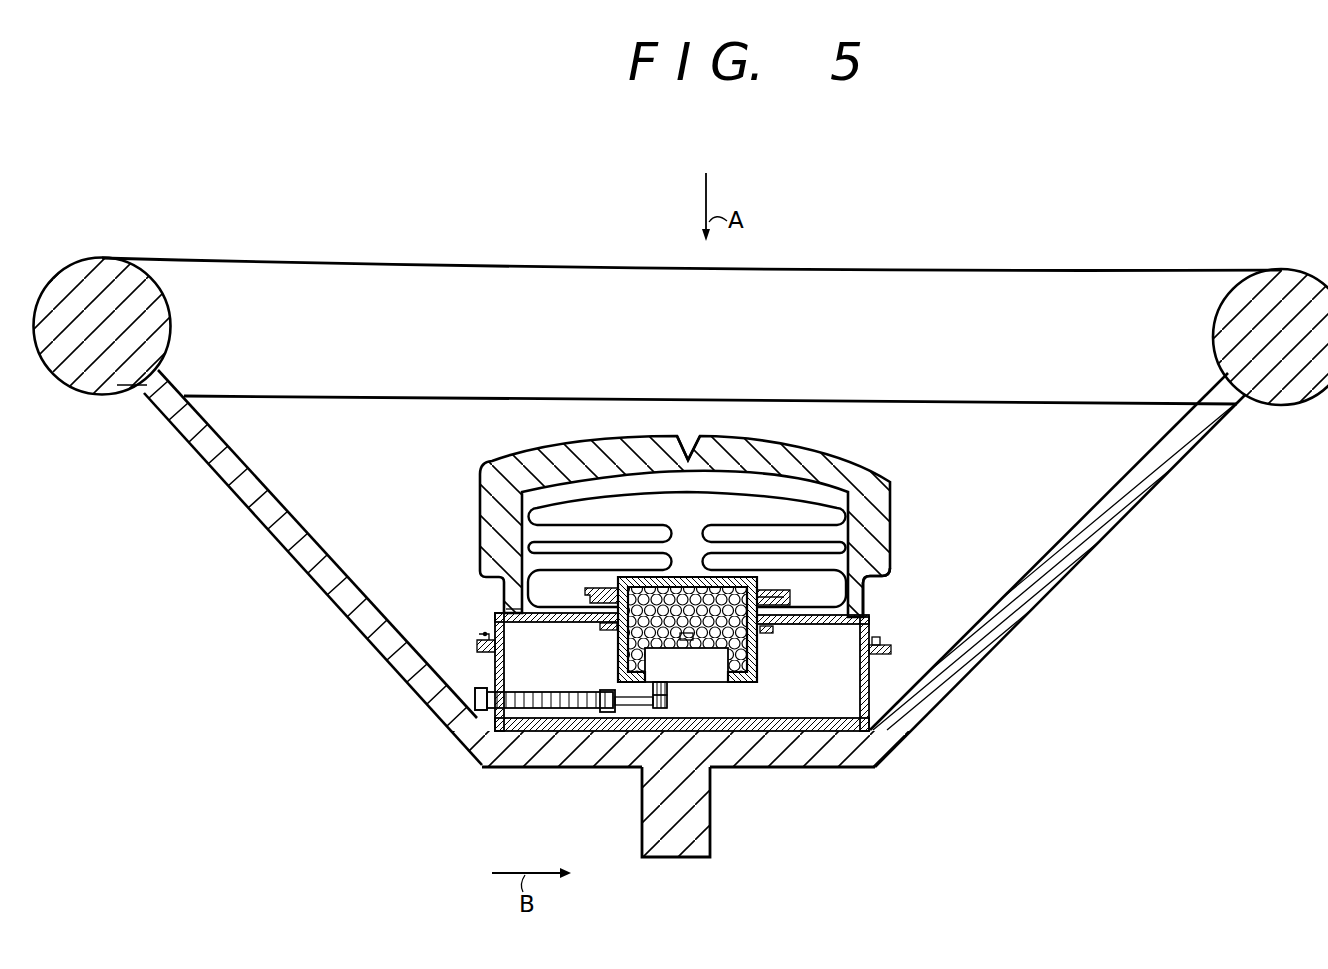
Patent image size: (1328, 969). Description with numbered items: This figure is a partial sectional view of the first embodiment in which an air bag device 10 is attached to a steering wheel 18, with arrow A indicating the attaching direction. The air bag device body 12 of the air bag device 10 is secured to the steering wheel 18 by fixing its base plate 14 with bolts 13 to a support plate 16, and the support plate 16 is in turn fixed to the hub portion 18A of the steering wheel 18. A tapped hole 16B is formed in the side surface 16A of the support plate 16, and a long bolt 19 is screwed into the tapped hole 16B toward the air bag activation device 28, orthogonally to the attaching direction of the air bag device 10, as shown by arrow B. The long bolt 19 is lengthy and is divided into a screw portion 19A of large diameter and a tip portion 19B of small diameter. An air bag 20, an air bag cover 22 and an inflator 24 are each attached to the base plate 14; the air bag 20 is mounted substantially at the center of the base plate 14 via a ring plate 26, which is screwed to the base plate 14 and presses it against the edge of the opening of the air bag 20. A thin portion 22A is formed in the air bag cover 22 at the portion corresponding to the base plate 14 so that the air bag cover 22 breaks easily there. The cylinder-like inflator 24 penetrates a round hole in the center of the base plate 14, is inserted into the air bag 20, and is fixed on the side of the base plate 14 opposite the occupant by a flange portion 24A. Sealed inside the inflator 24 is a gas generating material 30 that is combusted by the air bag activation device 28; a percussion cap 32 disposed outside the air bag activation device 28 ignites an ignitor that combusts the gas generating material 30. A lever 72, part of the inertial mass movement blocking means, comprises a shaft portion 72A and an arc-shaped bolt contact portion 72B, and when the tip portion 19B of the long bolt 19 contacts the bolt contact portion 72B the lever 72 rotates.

The air bag device 10 is at (680, 572).
The air bag device body 12 is at (891, 571).
The bolts 13 is at (485, 632).
The base plate 14 is at (516, 606).
The support plate 16 is at (889, 748).
The side surface 16A is at (492, 662).
The tapped hole 16B is at (492, 719).
The steering wheel 18 is at (835, 264).
The hub portion 18A is at (515, 757).
The long bolt 19 is at (580, 714).
The screw portion 19A is at (548, 706).
The tip portion 19B is at (623, 690).
The air bag 20 is at (578, 498).
The air bag cover 22 is at (893, 484).
The thin portion 22A is at (690, 454).
The inflator 24 is at (770, 583).
The flange portion 24A is at (771, 633).
The ring plate 26 is at (795, 600).
The air bag activation device 28 is at (709, 672).
The gas generating material 30 is at (681, 577).
The percussion cap 32 is at (752, 681).
The lever 72 is at (713, 768).
The shaft portion 72A is at (668, 692).
The bolt contact portion 72B is at (670, 708).